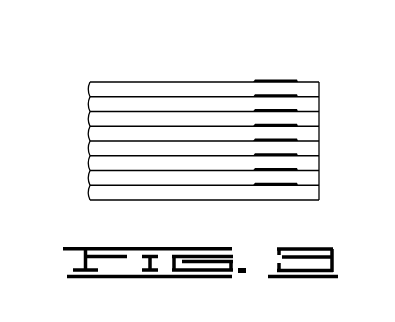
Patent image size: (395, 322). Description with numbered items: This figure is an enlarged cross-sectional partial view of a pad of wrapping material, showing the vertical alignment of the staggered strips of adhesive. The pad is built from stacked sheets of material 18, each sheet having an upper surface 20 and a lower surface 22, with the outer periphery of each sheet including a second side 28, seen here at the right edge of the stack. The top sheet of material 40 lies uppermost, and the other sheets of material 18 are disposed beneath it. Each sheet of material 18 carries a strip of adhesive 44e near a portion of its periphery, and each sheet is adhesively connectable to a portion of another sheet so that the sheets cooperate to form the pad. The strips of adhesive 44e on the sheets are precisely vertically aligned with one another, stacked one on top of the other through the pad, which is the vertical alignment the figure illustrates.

The sheet of material 18 is at (225, 123).
The upper surface 20 is at (183, 82).
The top sheet of material 40 is at (130, 82).
The strip of adhesive 44e is at (277, 82).
The second side 28 is at (320, 90).
The lower surface 22 is at (195, 201).